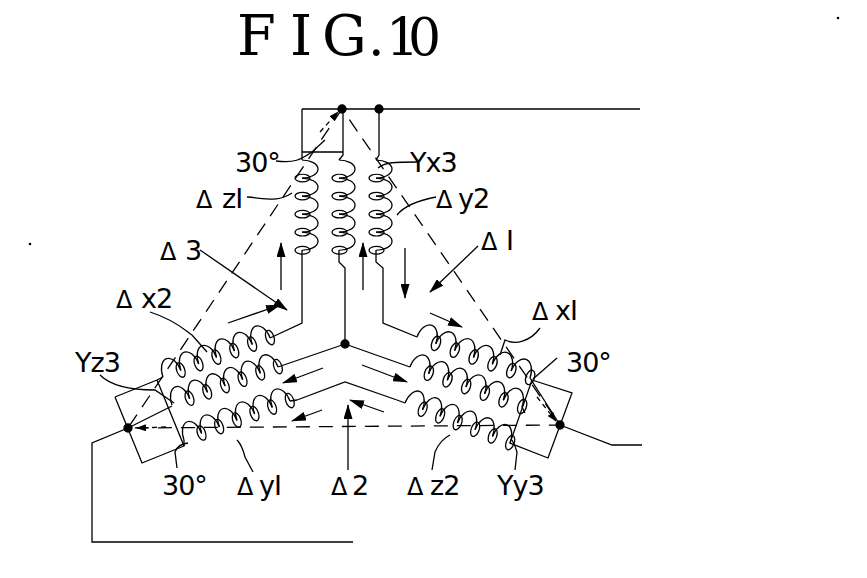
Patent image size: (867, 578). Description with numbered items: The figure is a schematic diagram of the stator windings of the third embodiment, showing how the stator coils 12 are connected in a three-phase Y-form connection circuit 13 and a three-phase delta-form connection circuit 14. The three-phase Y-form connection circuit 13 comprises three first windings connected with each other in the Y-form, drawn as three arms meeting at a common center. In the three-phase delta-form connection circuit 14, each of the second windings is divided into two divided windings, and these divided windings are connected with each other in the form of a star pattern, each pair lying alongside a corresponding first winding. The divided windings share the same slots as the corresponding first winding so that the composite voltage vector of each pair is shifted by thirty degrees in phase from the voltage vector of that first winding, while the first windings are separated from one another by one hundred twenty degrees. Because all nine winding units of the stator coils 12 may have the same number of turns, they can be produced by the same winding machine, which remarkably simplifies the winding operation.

The stator coils 12 is at (177, 213).
The three-phase Y-form connection circuit 13 is at (338, 384).
The three-phase delta-form connection circuit 14 is at (398, 320).